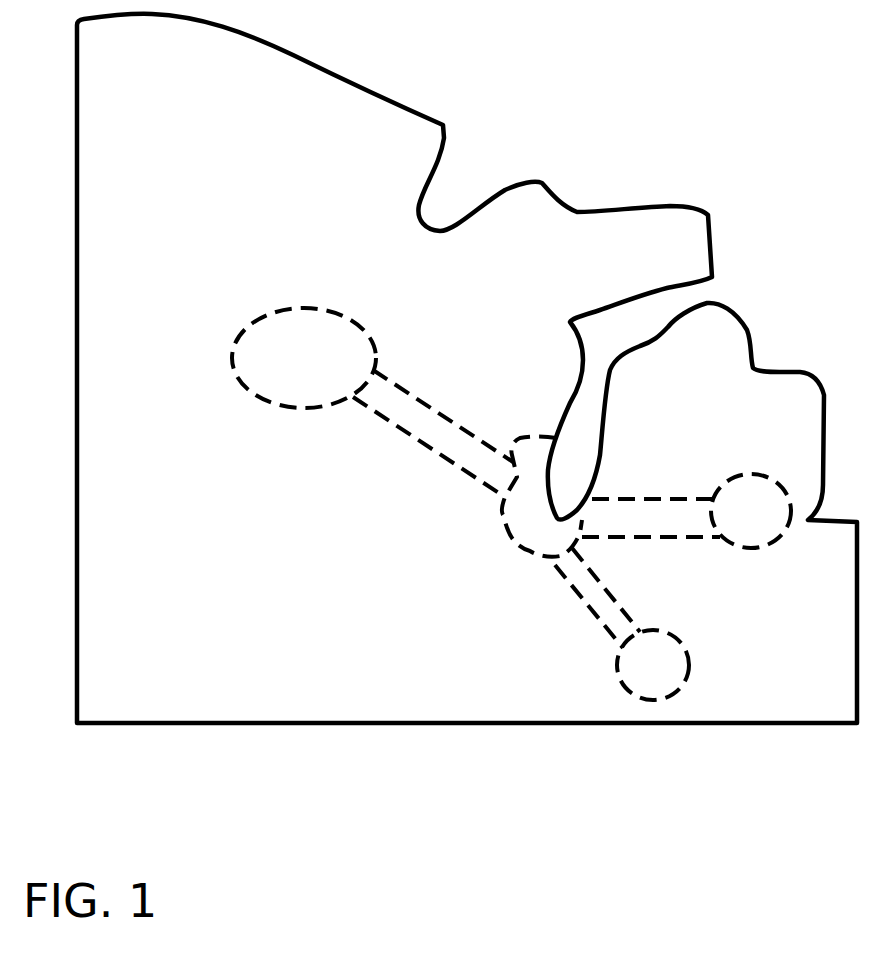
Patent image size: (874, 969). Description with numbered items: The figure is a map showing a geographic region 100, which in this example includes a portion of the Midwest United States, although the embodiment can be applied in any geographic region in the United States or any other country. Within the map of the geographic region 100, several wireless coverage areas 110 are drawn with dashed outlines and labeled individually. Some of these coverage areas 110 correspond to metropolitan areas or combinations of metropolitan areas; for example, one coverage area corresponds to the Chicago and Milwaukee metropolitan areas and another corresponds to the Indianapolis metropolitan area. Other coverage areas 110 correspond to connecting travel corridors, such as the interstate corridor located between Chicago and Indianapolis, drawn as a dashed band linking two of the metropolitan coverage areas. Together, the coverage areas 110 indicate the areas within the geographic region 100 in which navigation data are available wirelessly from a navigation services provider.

The geographic region 100 is at (217, 126).
The wireless coverage areas 110 is at (519, 431).